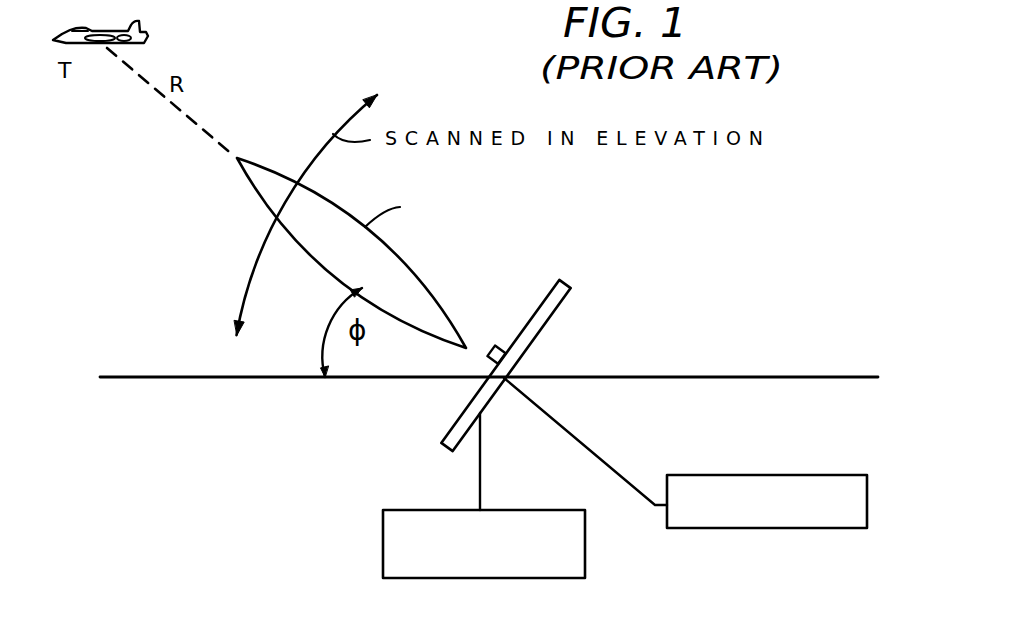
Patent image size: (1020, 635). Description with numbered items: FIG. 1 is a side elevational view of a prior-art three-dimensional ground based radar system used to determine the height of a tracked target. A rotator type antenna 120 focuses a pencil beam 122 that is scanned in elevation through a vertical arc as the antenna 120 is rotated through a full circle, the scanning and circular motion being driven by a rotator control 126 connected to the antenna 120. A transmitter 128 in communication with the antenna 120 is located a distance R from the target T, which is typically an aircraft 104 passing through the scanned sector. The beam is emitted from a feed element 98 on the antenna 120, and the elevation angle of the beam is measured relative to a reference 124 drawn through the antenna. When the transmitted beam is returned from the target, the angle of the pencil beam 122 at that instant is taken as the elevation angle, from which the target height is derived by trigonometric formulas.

The target aircraft 104 is at (145, 36).
The pencil beam 122 is at (402, 263).
The feed element 98 is at (495, 347).
The rotator antenna 120 is at (566, 283).
The reference plane 124 is at (785, 396).
The rotator control 126 is at (383, 545).
The transmitter 128 is at (780, 475).